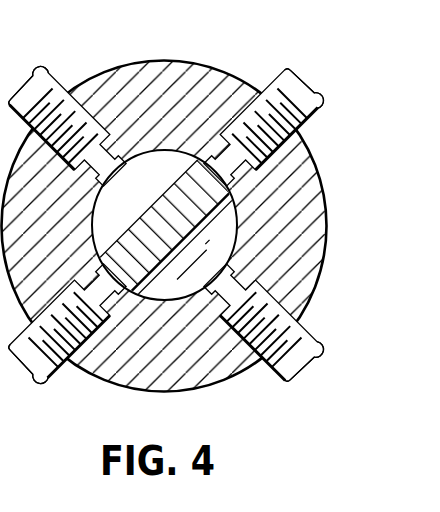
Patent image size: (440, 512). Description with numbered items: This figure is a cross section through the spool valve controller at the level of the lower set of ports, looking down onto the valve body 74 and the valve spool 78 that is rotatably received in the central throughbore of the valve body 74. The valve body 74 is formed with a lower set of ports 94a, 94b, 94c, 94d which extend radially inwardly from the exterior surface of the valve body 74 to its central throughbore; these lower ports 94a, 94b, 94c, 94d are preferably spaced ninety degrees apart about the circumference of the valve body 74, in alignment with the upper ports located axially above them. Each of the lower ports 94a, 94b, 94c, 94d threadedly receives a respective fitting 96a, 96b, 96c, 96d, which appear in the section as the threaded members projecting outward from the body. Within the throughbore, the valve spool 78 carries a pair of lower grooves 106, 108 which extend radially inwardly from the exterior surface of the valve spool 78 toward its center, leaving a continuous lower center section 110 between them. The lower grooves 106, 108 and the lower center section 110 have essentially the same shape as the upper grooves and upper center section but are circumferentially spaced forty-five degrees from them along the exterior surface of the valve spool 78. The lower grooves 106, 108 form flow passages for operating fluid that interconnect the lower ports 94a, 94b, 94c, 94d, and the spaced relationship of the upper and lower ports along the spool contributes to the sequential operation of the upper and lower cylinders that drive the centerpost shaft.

The valve body 74 is at (174, 58).
The valve spool 78 is at (248, 209).
The lower port 94a is at (110, 143).
The lower port 94b is at (217, 112).
The lower port 94c is at (208, 297).
The lower port 94d is at (112, 312).
The fitting 96a is at (48, 83).
The fitting 96b is at (283, 85).
The fitting 96c is at (281, 368).
The fitting 96d is at (47, 386).
The lower groove 106 is at (139, 206).
The lower groove 108 is at (213, 259).
The lower center section 110 is at (230, 192).